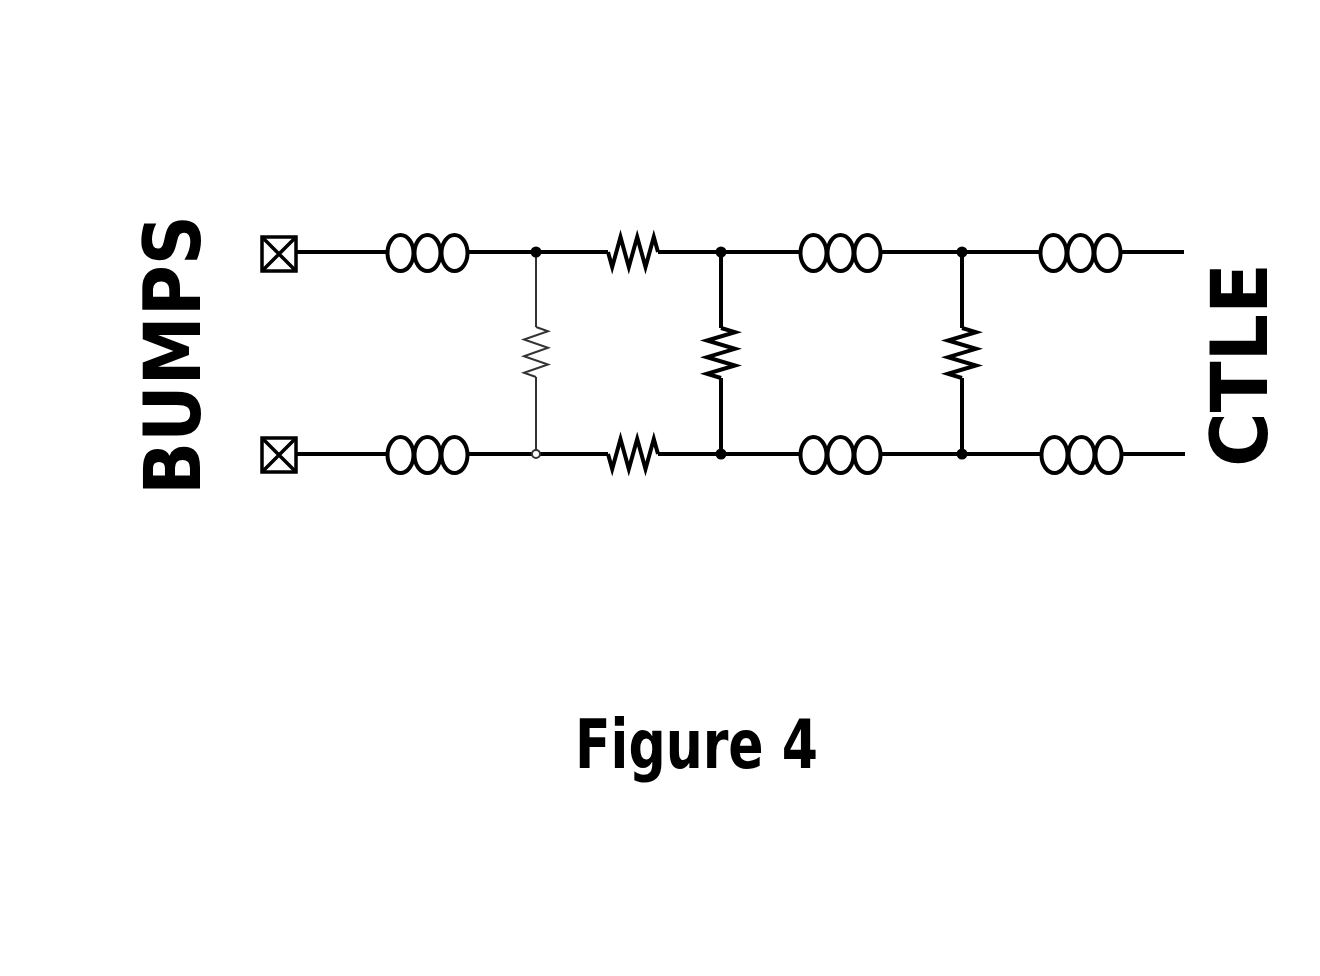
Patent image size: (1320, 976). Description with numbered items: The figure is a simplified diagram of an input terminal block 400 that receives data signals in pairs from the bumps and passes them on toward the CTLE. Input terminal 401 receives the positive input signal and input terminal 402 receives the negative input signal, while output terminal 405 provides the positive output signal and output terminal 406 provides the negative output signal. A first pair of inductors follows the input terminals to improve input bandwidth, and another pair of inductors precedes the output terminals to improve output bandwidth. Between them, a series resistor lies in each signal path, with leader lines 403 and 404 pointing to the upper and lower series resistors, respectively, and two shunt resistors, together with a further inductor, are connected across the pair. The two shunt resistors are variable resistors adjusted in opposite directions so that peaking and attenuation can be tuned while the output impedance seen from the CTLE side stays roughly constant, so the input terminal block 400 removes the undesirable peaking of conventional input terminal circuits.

The input terminal block 400 is at (658, 38).
The input terminal 401 is at (264, 237).
The input terminal 402 is at (270, 474).
The first series resistor R1 403 is at (621, 213).
The second series resistor R1 404 is at (638, 460).
The output terminal 405 is at (1160, 250).
The output terminal 406 is at (1155, 454).